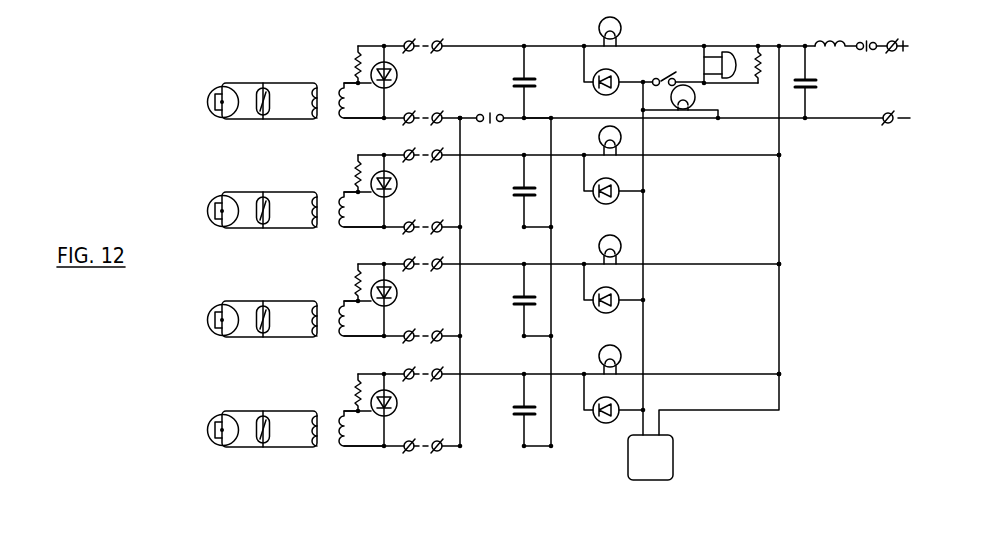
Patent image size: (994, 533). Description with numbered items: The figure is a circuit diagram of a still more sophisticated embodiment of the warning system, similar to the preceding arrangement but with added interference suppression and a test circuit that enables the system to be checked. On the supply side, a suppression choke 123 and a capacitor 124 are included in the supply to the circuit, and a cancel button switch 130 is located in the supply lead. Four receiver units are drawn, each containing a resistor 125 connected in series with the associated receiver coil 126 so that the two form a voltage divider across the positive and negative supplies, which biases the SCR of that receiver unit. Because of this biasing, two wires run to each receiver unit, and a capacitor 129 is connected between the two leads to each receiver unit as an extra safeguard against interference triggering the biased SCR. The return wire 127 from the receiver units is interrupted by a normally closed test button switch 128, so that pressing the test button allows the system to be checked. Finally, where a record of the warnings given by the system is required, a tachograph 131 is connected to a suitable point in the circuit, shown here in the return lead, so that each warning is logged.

The suppression choke 123 is at (823, 42).
The capacitor 124 is at (817, 83).
The resistor 125 is at (356, 68).
The receiver coil 126 is at (341, 103).
The return wire 127 is at (465, 108).
The test button switch 128 is at (490, 123).
The capacitor 129 is at (535, 79).
The cancel button switch 130 is at (866, 41).
The tachograph 131 is at (650, 457).